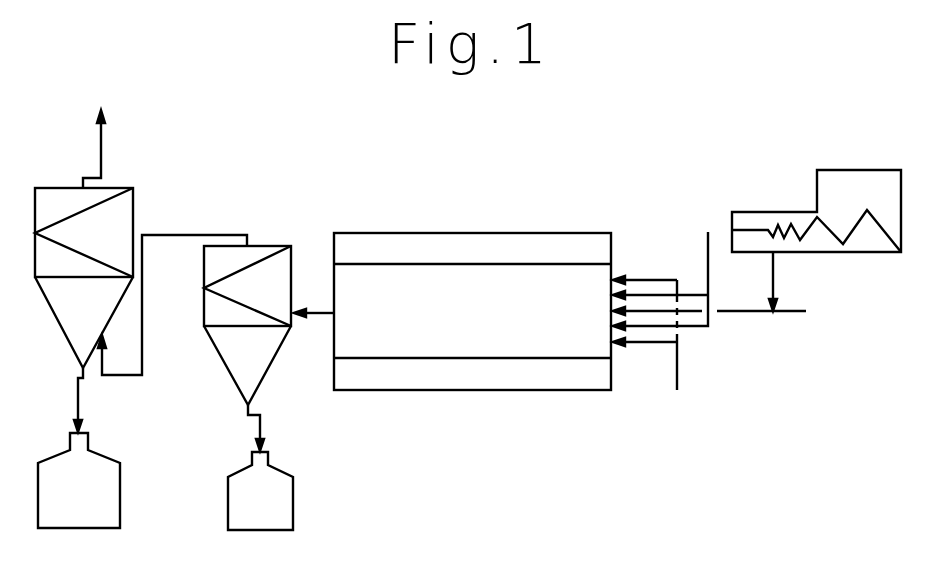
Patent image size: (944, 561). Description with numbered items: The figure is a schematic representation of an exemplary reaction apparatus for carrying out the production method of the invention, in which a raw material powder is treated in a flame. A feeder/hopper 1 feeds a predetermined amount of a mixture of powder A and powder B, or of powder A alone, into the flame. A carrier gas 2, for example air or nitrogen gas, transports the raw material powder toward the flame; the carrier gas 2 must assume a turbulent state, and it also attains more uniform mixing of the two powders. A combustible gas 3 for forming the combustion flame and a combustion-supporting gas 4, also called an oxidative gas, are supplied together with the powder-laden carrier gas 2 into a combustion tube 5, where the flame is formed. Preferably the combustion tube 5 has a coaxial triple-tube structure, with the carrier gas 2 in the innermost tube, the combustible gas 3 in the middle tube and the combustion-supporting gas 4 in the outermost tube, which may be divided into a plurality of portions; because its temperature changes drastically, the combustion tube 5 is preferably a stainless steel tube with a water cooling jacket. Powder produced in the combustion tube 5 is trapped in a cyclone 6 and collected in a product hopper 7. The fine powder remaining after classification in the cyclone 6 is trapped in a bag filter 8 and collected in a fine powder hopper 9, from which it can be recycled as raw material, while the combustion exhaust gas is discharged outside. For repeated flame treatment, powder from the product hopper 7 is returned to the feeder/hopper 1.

The feeder/hopper 1 is at (816, 185).
The carrier gas 2 is at (726, 291).
The combustible gas 3 is at (666, 262).
The combustion-supporting gas 4 is at (650, 350).
The combustion tube 5 is at (472, 311).
The cyclone 6 is at (269, 325).
The product hopper 7 is at (260, 467).
The bag filter 8 is at (141, 242).
The fine powder hopper 9 is at (79, 448).